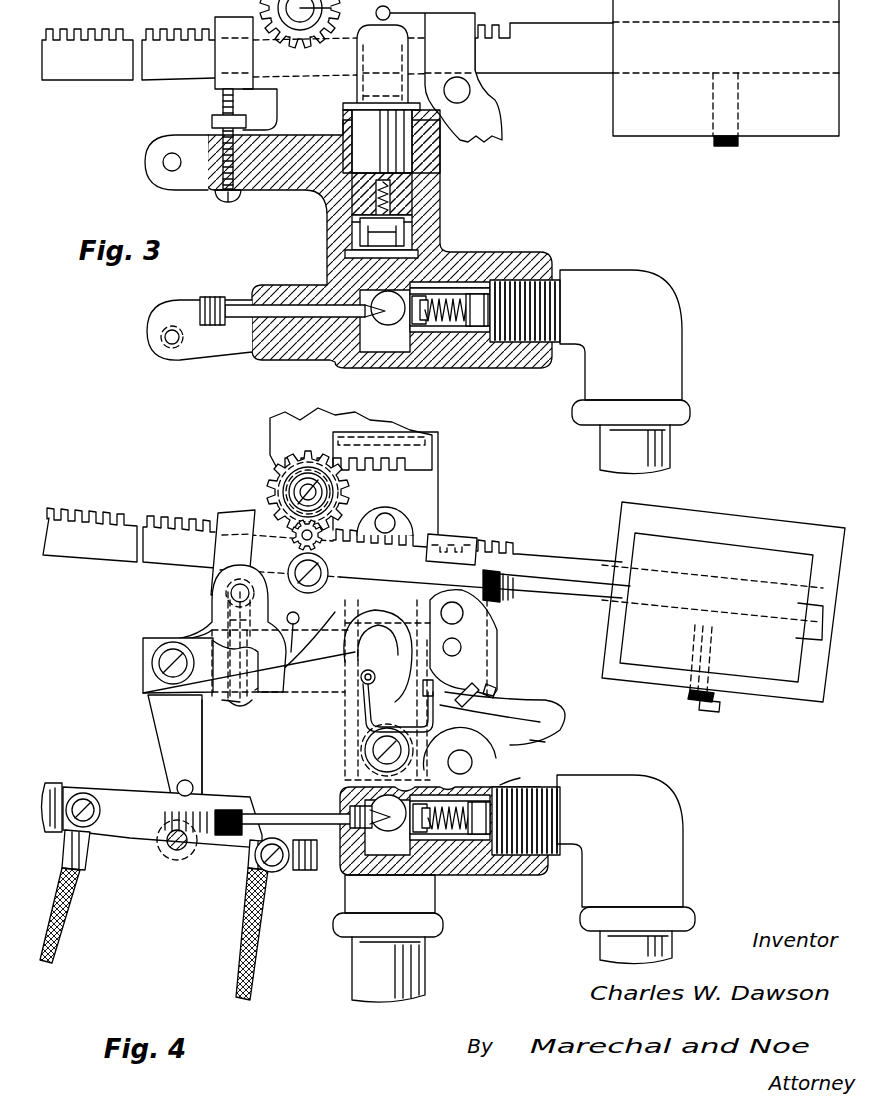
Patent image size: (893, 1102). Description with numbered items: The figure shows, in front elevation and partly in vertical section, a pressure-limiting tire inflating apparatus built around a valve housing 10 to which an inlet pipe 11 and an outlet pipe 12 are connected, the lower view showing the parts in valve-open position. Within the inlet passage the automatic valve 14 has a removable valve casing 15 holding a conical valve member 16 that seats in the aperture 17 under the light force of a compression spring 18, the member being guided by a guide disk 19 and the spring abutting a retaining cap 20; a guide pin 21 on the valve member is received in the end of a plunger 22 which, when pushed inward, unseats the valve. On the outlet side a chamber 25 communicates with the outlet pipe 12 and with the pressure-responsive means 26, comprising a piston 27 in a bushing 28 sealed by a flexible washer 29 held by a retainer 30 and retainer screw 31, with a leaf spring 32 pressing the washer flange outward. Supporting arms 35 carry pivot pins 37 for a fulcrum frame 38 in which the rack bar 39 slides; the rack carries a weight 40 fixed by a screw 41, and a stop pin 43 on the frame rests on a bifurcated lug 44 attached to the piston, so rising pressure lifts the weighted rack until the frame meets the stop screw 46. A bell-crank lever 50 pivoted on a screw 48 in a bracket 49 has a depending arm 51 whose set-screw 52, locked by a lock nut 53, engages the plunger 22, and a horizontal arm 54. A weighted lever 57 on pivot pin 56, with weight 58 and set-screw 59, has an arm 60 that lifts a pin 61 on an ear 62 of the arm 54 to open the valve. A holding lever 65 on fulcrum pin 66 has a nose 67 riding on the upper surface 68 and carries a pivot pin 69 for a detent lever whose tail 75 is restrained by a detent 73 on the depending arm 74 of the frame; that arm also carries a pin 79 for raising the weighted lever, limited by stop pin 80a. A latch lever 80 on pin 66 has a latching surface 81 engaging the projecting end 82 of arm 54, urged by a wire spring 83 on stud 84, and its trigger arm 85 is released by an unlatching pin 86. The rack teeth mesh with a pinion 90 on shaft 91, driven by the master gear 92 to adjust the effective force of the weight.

In FIG. 3, the valve housing 10 is at (518, 262).
In FIG. 3, the inlet pipe 11 is at (635, 292).
In FIG. 4, the inlet pipe 11 is at (662, 828).
In FIG. 4, the outlet pipe 12 is at (375, 972).
In FIG. 3, the automatic valve 14 is at (440, 325).
In FIG. 4, the automatic valve 14 is at (450, 838).
In FIG. 3, the valve casing 15 is at (478, 285).
In FIG. 4, the valve casing 15 is at (490, 845).
In FIG. 3, the valve member 16 is at (418, 326).
In FIG. 4, the valve member 16 is at (425, 838).
In FIG. 4, the aperture 17 is at (395, 850).
In FIG. 3, the compression spring 18 is at (470, 328).
In FIG. 4, the compression spring 18 is at (478, 836).
In FIG. 3, the guide disk 19 is at (427, 330).
In FIG. 4, the guide disk 19 is at (438, 840).
In FIG. 3, the retaining cap 20 is at (490, 326).
In FIG. 4, the retaining cap 20 is at (510, 850).
In FIG. 3, the guide pin 21 is at (376, 336).
In FIG. 4, the guide pin 21 is at (378, 836).
In FIG. 3, the plunger 22 is at (281, 326).
In FIG. 4, the plunger 22 is at (340, 830).
In FIG. 3, the chamber 25 is at (392, 352).
In FIG. 4, the chamber 25 is at (380, 850).
In FIG. 3, the pressure-responsive means 26 is at (360, 206).
In FIG. 3, the piston 27 is at (398, 150).
In FIG. 3, the bushing 28 is at (428, 181).
In FIG. 3, the flexible washer 29 is at (412, 222).
In FIG. 3, the retainer 30 is at (362, 255).
In FIG. 3, the retainer screw 31 is at (440, 262).
In FIG. 3, the leaf spring 32 is at (358, 233).
In FIG. 3, the supporting arms 35 is at (292, 99).
In FIG. 4, the supporting arms 35 is at (290, 482).
In FIG. 4, the pivot pins 37 is at (292, 530).
In FIG. 3, the fulcrum frame 38 is at (240, 68).
In FIG. 4, the fulcrum frame 38 is at (400, 525).
In FIG. 3, the rack bar 39 is at (327, 51).
In FIG. 4, the rack bar 39 is at (528, 560).
In FIG. 3, the weight 40 is at (726, 68).
In FIG. 4, the weight 40 is at (728, 525).
In FIG. 3, the screw 41 is at (718, 150).
In FIG. 4, the screw 41 is at (712, 695).
In FIG. 4, the stop pin 43 is at (387, 513).
In FIG. 4, the bifurcated lug 44 is at (428, 540).
In FIG. 3, the stop screw 46 is at (222, 108).
In FIG. 4, the stop screw 46 is at (232, 700).
In FIG. 4, the screw 48 is at (155, 662).
In FIG. 4, the bracket 49 is at (235, 705).
In FIG. 4, the bell-crank lever 50 is at (168, 714).
In FIG. 4, the depending arm 51 is at (185, 752).
In FIG. 4, the set-screw 52 is at (150, 822).
In FIG. 4, the lock nut 53 is at (170, 832).
In FIG. 4, the horizontal arm 54 is at (262, 690).
In FIG. 4, the pivot pin 56 is at (290, 567).
In FIG. 4, the weighted lever 57 is at (560, 580).
In FIG. 4, the weight 58 is at (770, 545).
In FIG. 4, the set-screw 59 is at (700, 688).
In FIG. 4, the arm 60 is at (240, 605).
In FIG. 4, the pin 61 is at (230, 592).
In FIG. 4, the ear 62 is at (213, 620).
In FIG. 4, the holding lever 65 is at (437, 680).
In FIG. 4, the fulcrum pin 66 is at (490, 715).
In FIG. 4, the nose 67 is at (299, 620).
In FIG. 4, the upper surface 68 is at (345, 680).
In FIG. 4, the pivot pin 69 is at (455, 645).
In FIG. 4, the detent 73 is at (478, 690).
In FIG. 3, the depending arm 74 is at (493, 120).
In FIG. 4, the depending arm 74 is at (490, 757).
In FIG. 4, the tail 75 is at (498, 690).
In FIG. 3, the pin 79 is at (464, 93).
In FIG. 4, the pin 79 is at (455, 610).
In FIG. 4, the latch lever 80 is at (365, 756).
In FIG. 4, the stop pin 80a is at (293, 626).
In FIG. 4, the latching surface 81 is at (345, 718).
In FIG. 4, the projecting end 82 is at (333, 700).
In FIG. 4, the wire spring 83 is at (368, 728).
In FIG. 4, the stud 84 is at (362, 684).
In FIG. 4, the trigger arm 85 is at (540, 740).
In FIG. 4, the unlatching pin 86 is at (515, 770).
In FIG. 4, the pinion 90 is at (290, 458).
In FIG. 4, the shaft 91 is at (288, 470).
In FIG. 4, the master gear 92 is at (322, 425).